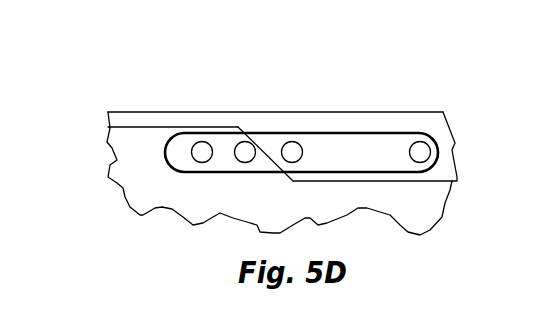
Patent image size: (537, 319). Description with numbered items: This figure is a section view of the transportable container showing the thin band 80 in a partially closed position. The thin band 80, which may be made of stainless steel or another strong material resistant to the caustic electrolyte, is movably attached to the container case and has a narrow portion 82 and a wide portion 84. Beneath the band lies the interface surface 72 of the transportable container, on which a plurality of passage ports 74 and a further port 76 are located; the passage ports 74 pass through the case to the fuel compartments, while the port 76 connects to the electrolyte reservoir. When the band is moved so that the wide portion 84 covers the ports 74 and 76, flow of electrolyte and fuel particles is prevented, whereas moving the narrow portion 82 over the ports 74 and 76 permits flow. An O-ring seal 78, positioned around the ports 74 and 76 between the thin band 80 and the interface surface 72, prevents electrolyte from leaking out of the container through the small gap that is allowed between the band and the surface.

The thin band 80 is at (108, 112).
The narrow portion 82 is at (152, 112).
The wide portion 84 is at (395, 110).
The passage ports 74 is at (212, 138).
The port 76 is at (431, 152).
The interface surface 72 is at (122, 163).
The O-ring seal 78 is at (169, 165).